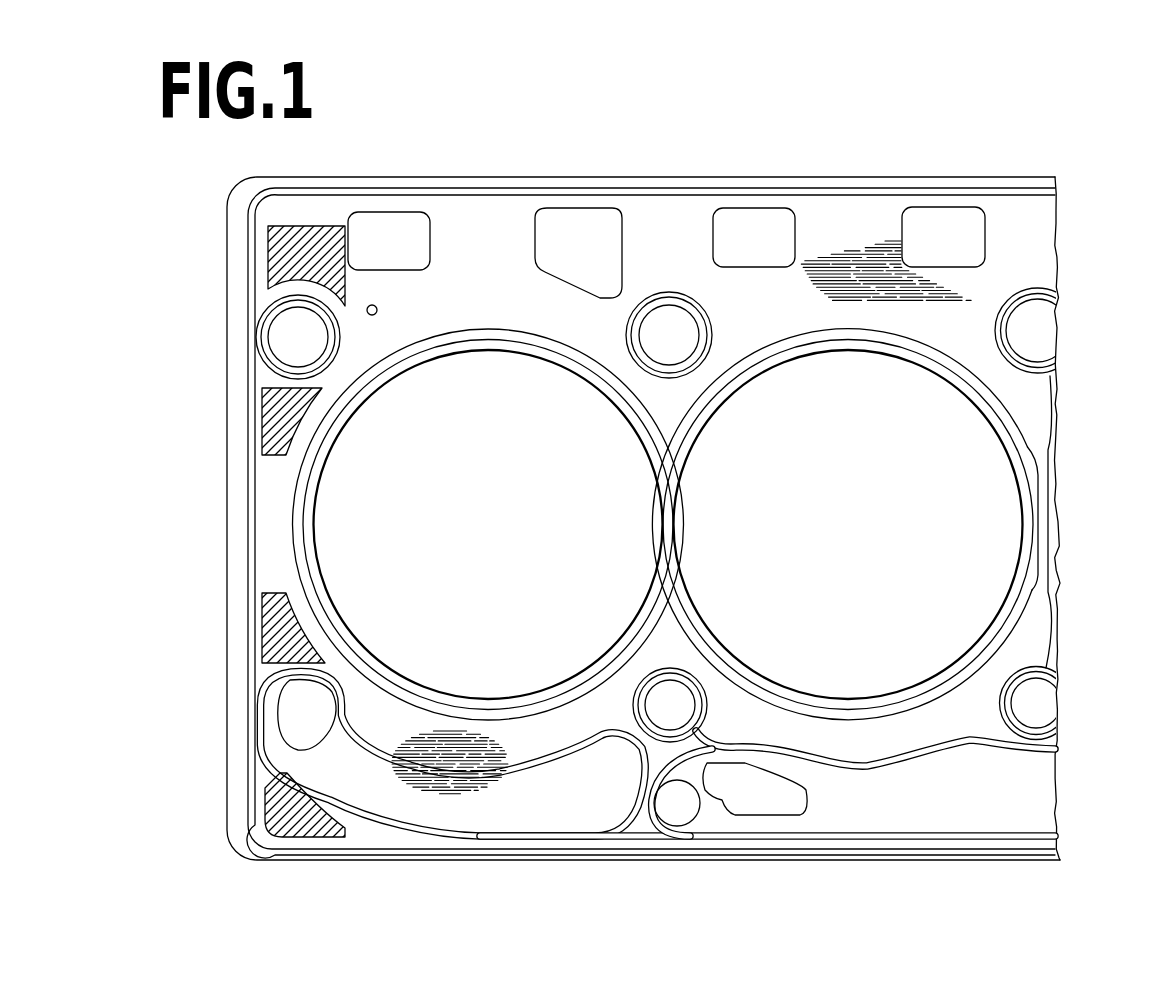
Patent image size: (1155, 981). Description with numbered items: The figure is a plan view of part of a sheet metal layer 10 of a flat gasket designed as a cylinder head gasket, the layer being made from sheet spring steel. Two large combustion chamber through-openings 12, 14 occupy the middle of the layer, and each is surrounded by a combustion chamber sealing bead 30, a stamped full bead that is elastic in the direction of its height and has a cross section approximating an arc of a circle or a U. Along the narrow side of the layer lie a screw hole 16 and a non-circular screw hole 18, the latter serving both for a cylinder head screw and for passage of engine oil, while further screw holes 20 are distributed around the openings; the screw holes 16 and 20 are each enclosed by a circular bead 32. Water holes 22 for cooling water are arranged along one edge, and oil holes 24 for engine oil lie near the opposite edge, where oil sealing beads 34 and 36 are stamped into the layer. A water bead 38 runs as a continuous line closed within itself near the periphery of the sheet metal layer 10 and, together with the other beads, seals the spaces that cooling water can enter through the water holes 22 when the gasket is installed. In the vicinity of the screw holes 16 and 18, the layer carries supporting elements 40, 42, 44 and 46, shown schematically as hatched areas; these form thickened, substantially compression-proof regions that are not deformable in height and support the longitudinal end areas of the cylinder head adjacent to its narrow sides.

The sheet metal layer 10 is at (1050, 166).
The combustion chamber through-opening 12 is at (470, 536).
The combustion chamber through-opening 14 is at (832, 536).
The screw hole 16 is at (290, 312).
The screw hole 18 is at (297, 695).
The screw holes 20 is at (670, 330).
The water holes 22 is at (426, 222).
The oil holes 24 is at (655, 800).
The combustion chamber sealing beads 30 is at (487, 331).
The circular beads 32 is at (263, 372).
The oil sealing bead 34 is at (264, 747).
The oil sealing bead 36 is at (868, 834).
The water bead 38 is at (520, 188).
The supporting element 40 is at (270, 793).
The supporting element 42 is at (270, 626).
The supporting element 44 is at (263, 425).
The supporting element 46 is at (277, 288).